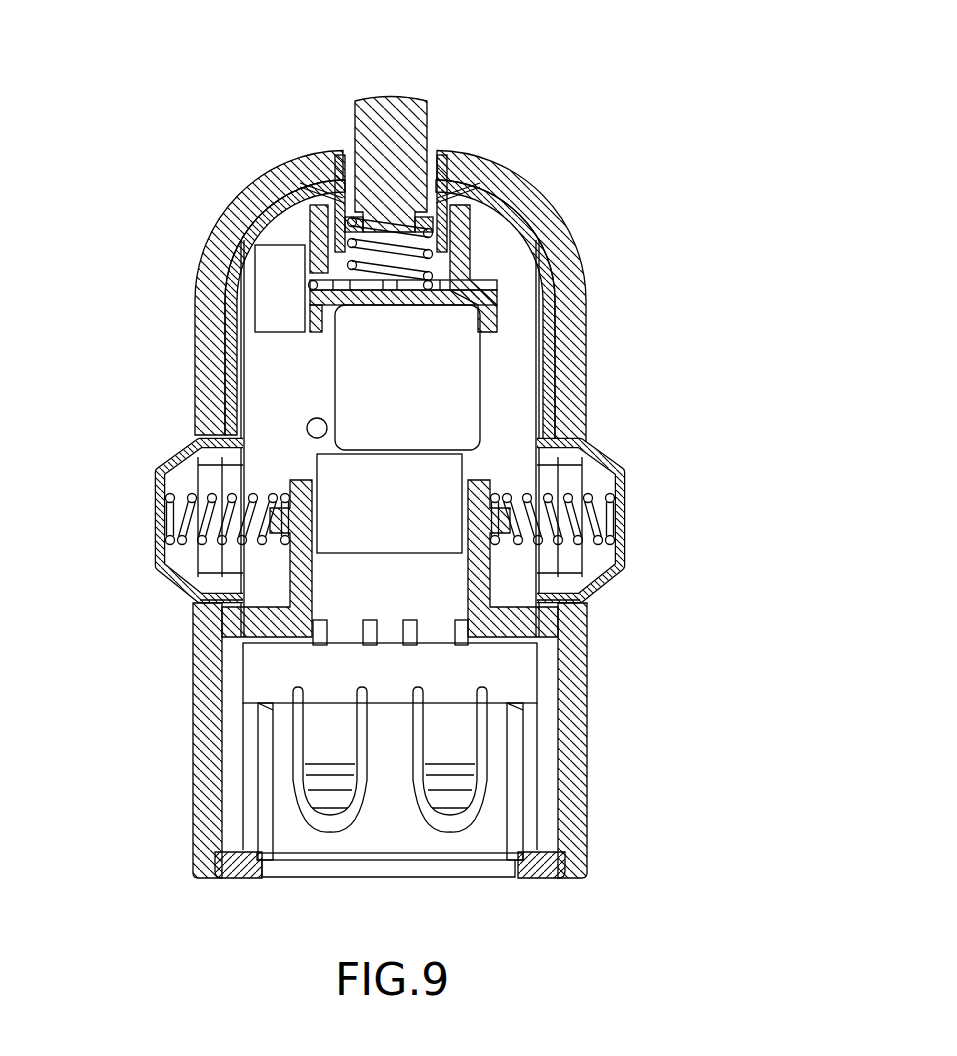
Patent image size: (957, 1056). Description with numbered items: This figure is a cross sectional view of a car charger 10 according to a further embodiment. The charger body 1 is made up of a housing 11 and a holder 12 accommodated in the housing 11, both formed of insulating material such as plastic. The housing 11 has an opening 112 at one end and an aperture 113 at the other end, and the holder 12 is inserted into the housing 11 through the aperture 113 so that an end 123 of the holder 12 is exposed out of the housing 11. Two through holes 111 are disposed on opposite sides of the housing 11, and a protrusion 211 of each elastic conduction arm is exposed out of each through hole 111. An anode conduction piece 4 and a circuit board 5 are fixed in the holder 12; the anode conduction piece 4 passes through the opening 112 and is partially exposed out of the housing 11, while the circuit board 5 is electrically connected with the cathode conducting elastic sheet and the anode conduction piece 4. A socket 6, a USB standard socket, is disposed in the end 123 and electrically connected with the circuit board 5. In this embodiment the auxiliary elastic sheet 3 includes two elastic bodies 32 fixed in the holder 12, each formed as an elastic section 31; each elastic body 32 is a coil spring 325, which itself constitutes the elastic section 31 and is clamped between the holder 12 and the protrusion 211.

The push-button device 10 is at (403, 39).
The charger body 1 is at (346, 297).
The housing 11 is at (253, 184).
The holder 12 is at (300, 222).
The anode conduction piece 4 is at (402, 110).
The opening 112 is at (405, 150).
The auxiliary elastic sheet 3 is at (572, 482).
The elastic section 31 is at (570, 424).
The elastic body 32 is at (429, 506).
The coil spring 325 is at (624, 466).
The protrusion 211 is at (627, 518).
The through hole 111 is at (624, 576).
The circuit board 5 is at (577, 625).
The socket 6 is at (500, 748).
The end 123 is at (247, 880).
The aperture 113 is at (539, 880).